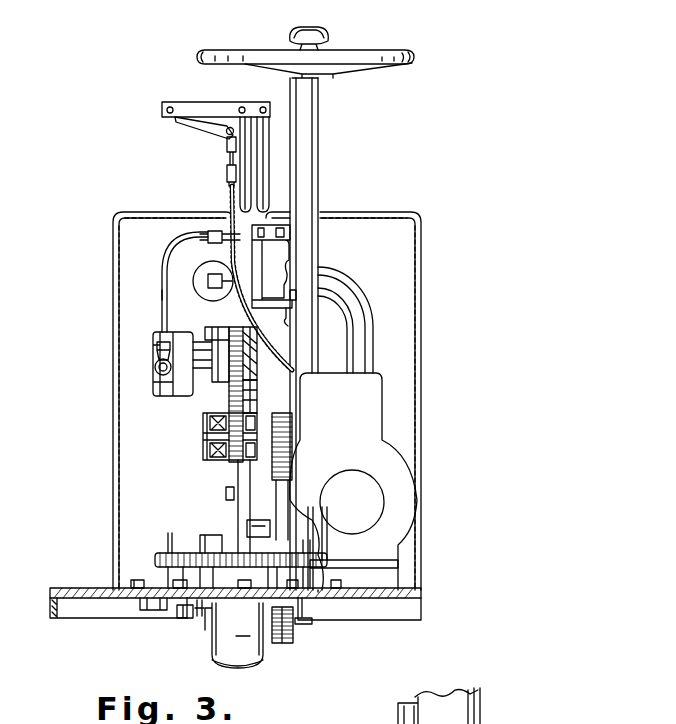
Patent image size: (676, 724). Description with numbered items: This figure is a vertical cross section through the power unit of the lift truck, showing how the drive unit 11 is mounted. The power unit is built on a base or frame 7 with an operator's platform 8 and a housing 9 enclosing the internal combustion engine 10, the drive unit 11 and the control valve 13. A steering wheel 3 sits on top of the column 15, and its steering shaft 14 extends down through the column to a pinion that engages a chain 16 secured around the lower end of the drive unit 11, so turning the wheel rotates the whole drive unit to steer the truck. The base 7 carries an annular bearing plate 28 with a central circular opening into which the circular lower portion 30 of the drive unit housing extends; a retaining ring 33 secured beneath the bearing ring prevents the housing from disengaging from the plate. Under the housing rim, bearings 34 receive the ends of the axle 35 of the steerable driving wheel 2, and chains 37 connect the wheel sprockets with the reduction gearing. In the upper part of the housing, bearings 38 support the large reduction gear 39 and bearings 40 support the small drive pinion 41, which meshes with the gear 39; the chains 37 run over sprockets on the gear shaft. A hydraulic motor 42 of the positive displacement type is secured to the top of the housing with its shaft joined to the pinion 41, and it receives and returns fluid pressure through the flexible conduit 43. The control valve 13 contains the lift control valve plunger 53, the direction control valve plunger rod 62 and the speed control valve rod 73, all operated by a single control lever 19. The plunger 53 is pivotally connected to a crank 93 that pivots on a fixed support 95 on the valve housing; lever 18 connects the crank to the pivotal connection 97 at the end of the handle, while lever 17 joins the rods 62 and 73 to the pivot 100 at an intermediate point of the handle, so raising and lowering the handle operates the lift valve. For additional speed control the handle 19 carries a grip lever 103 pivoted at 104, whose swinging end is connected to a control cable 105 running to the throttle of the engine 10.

The steerable driving wheel 2 is at (256, 668).
The steering wheel 3 is at (387, 58).
The base or frame 7 is at (52, 610).
The operator's platform 8 is at (88, 586).
The housing 9 is at (113, 478).
The internal combustion engine 10 is at (402, 478).
The drive unit 11 is at (236, 488).
The control valve 13 is at (220, 306).
The steering shaft 14 is at (315, 548).
The column 15 is at (312, 128).
The chain 16 is at (186, 567).
The lever 17 is at (228, 190).
The lever 18 is at (262, 192).
The control lever 19 is at (197, 109).
The annular bearing plate 28 is at (150, 585).
The circular lower portion 30 is at (219, 545).
The retaining ring 33 is at (156, 608).
The bearings 34 is at (186, 624).
The axle 35 is at (198, 620).
The chains 37 is at (294, 444).
The bearings 38 is at (204, 462).
The large reduction gear 39 is at (256, 396).
The bearings 40 is at (250, 372).
The small drive pinion 41 is at (228, 380).
The hydraulic motor 42 is at (164, 392).
The flexible conduit 43 is at (167, 290).
The lift control valve plunger 53 is at (300, 252).
The direction control valve plunger rod 62 is at (232, 238).
The speed control valve rod 73 is at (205, 280).
The crank 93 is at (300, 270).
The fixed support 95 is at (292, 308).
The pivotal connection 97 is at (263, 106).
The pivot 100 is at (241, 106).
The grip lever 103 is at (214, 130).
The pivot 104 is at (166, 110).
The control cable 105 is at (227, 169).